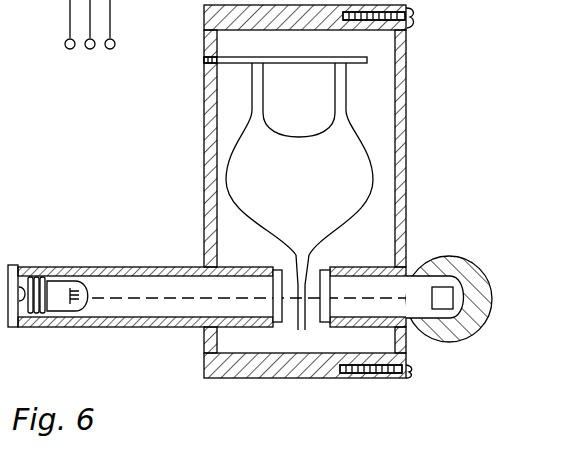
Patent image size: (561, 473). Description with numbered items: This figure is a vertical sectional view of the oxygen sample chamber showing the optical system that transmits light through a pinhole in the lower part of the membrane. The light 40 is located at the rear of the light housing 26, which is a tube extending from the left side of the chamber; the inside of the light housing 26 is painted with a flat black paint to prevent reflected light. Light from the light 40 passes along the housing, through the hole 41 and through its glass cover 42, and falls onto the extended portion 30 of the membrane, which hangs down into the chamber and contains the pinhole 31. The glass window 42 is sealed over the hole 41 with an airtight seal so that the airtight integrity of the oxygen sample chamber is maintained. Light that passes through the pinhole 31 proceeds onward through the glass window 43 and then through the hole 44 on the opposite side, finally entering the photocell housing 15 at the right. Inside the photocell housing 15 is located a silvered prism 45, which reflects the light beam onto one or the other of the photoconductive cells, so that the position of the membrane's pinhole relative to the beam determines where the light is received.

The photocell housing 15 is at (480, 306).
The light housing 26 is at (70, 267).
The extended portion of the membrane 30 is at (297, 281).
The pinhole 31 is at (306, 290).
The light 40 is at (70, 306).
The hole 41 is at (207, 302).
The glass cover 42 is at (283, 306).
The glass window 43 is at (319, 306).
The hole 44 is at (400, 308).
The silvered prism 45 is at (442, 292).